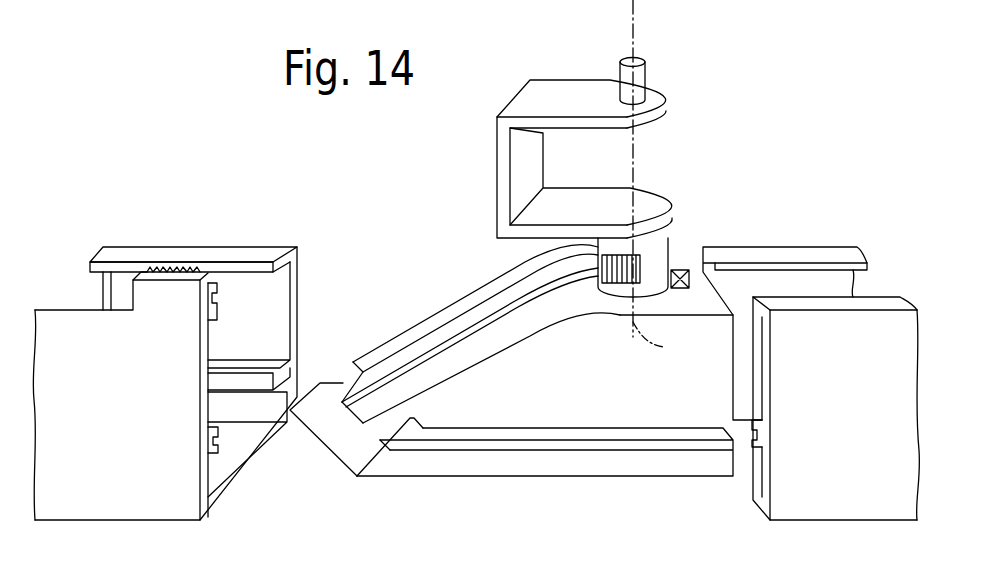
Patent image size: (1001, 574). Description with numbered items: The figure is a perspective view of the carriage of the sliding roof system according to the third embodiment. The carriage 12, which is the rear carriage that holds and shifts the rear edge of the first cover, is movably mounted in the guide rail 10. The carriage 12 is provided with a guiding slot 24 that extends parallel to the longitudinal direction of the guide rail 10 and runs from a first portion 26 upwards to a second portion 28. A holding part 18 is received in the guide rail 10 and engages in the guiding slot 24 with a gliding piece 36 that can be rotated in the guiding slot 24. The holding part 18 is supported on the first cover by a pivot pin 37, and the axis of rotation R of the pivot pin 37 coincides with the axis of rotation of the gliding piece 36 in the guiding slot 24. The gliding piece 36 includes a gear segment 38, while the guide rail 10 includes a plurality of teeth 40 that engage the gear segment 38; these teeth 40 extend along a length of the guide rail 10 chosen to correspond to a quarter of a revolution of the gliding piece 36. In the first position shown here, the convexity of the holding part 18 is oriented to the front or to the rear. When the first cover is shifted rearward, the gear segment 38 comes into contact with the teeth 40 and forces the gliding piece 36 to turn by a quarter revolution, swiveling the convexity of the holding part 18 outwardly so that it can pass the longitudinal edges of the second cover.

The guide rail 10 is at (101, 497).
The carriage 12 is at (573, 412).
The holding part 18 is at (501, 148).
The guiding slot 24 is at (487, 320).
The first portion 26 is at (395, 388).
The second portion 28 is at (684, 275).
The gliding piece 36 is at (662, 242).
The pivot pin 37 is at (641, 88).
The gear segment 38 is at (610, 284).
The plurality of teeth 40 is at (193, 267).
The axis of rotation R is at (659, 345).